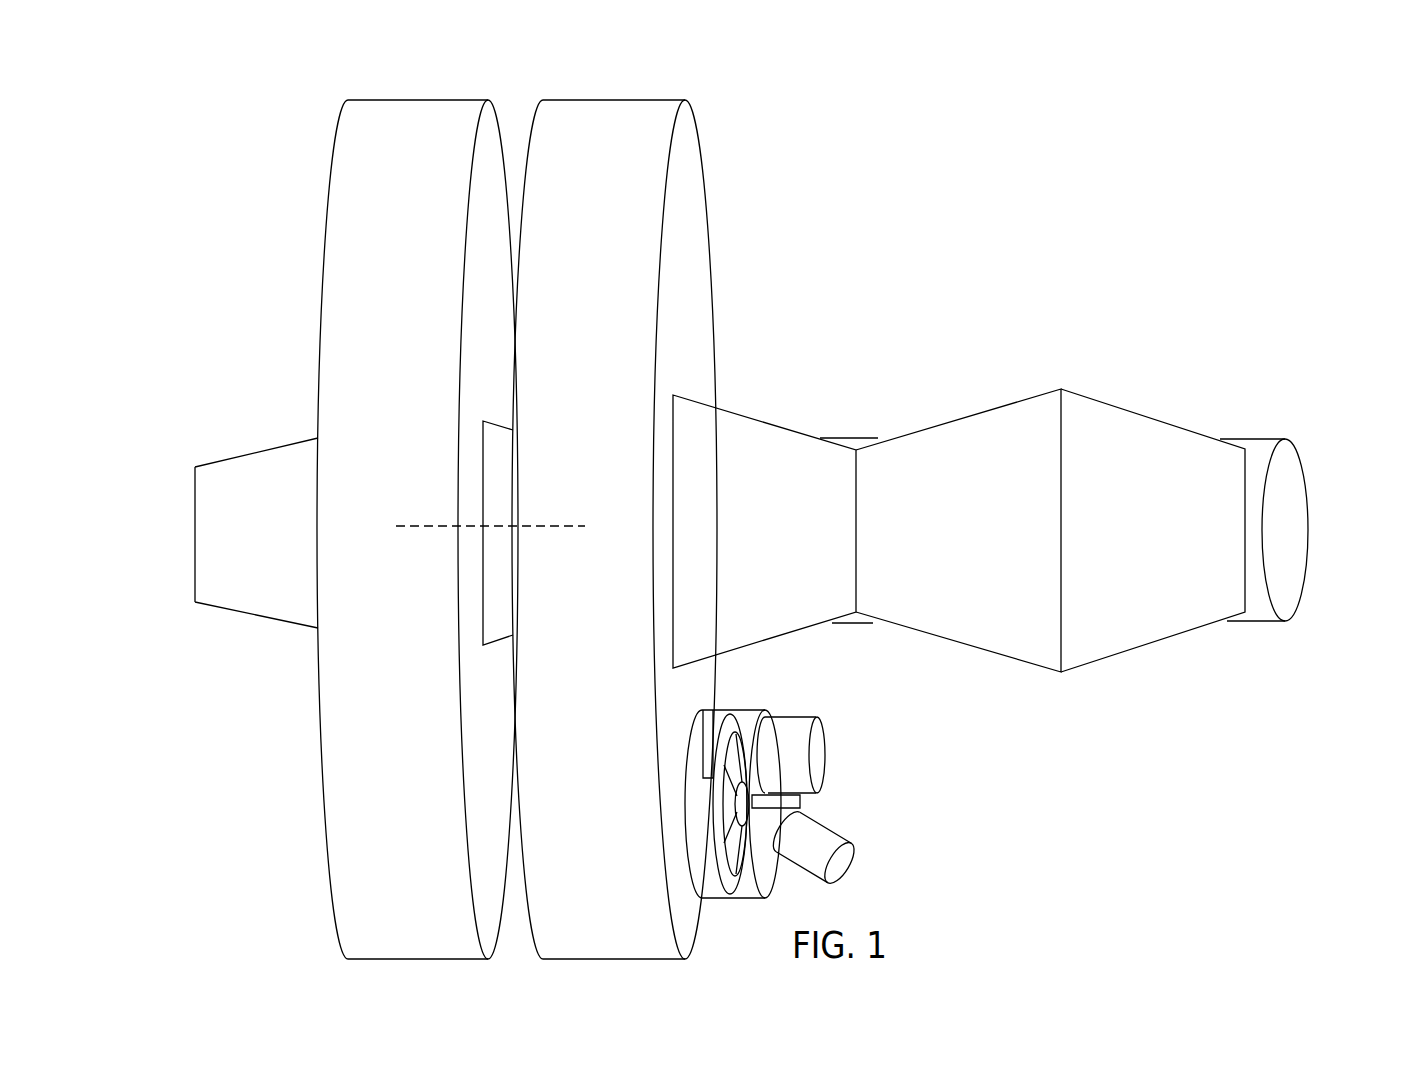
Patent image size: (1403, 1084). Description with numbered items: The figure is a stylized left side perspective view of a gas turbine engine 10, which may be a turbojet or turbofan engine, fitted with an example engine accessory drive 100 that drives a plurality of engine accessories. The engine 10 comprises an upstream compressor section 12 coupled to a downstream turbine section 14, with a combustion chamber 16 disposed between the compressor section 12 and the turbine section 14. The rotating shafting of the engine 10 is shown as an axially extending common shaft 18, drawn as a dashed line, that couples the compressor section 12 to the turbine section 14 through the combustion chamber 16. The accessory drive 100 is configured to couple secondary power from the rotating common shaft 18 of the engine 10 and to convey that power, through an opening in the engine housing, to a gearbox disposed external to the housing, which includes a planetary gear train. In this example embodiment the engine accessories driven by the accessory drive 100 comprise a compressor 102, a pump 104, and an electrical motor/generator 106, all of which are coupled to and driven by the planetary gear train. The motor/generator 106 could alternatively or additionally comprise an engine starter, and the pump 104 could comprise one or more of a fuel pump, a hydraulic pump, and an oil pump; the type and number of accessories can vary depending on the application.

The gas turbine engine 10 is at (751, 498).
The compressor section 12 is at (443, 100).
The turbine section 14 is at (619, 100).
The combustion chamber 16 is at (497, 445).
The common shaft 18 is at (437, 526).
The engine accessory drive 100 is at (827, 804).
The compressor 102 is at (815, 805).
The pump 104 is at (832, 861).
The electrical motor/generator 106 is at (815, 742).